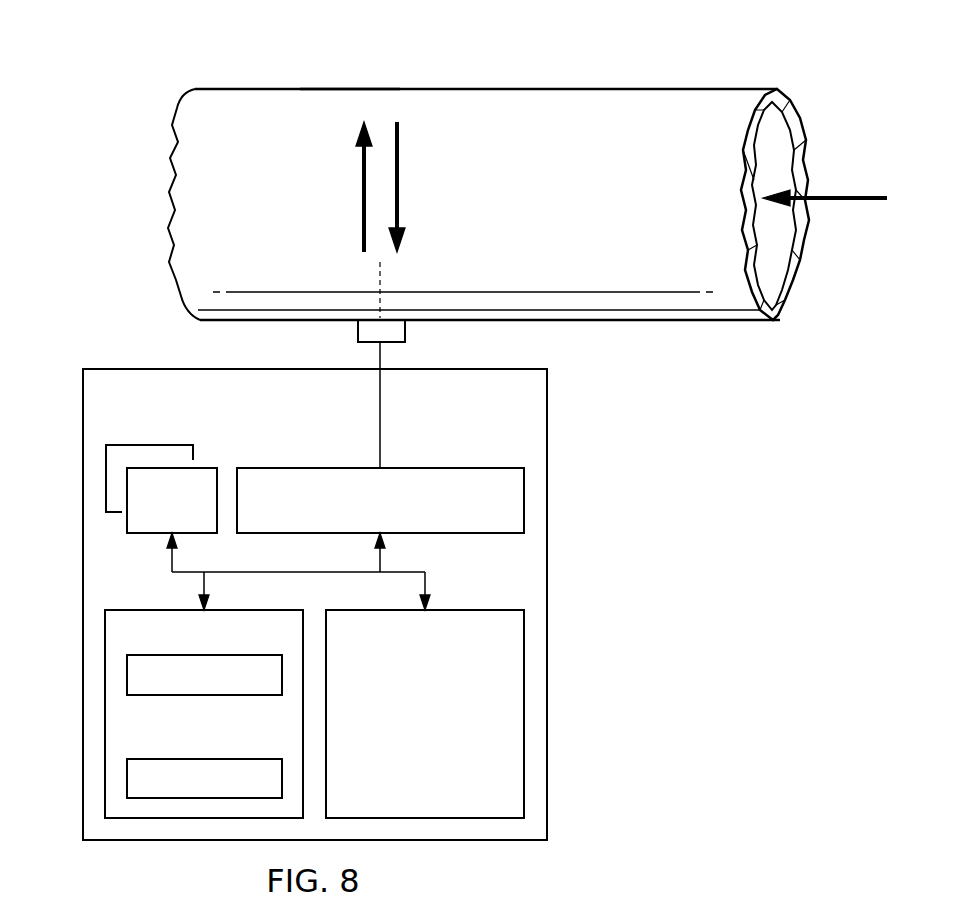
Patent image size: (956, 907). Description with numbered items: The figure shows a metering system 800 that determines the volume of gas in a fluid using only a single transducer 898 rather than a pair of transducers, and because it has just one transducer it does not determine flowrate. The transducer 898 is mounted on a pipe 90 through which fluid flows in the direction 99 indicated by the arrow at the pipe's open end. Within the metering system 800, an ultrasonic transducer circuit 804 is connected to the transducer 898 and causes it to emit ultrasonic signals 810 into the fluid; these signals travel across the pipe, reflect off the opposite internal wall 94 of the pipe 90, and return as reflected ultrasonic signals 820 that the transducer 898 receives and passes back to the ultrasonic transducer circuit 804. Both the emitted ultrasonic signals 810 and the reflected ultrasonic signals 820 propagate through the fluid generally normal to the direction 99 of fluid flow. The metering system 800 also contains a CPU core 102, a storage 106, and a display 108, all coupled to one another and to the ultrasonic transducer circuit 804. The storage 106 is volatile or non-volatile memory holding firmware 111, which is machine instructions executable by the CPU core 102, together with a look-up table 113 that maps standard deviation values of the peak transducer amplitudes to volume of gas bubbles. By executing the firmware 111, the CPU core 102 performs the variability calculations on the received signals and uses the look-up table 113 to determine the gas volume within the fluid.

The pipe 90 is at (562, 85).
The opposite internal wall 94 is at (345, 94).
The direction of fluid flow 99 is at (855, 196).
The emitted ultrasonic signals 810 is at (362, 197).
The reflected ultrasonic signals 820 is at (398, 188).
The transducer 898 is at (358, 330).
The metering system 800 is at (74, 640).
The CPU core 102 is at (145, 439).
The ultrasonic transducer circuit 804 is at (447, 468).
The storage 106 is at (144, 603).
The firmware 111 is at (185, 696).
The look-up table 113 is at (228, 758).
The display 108 is at (444, 745).